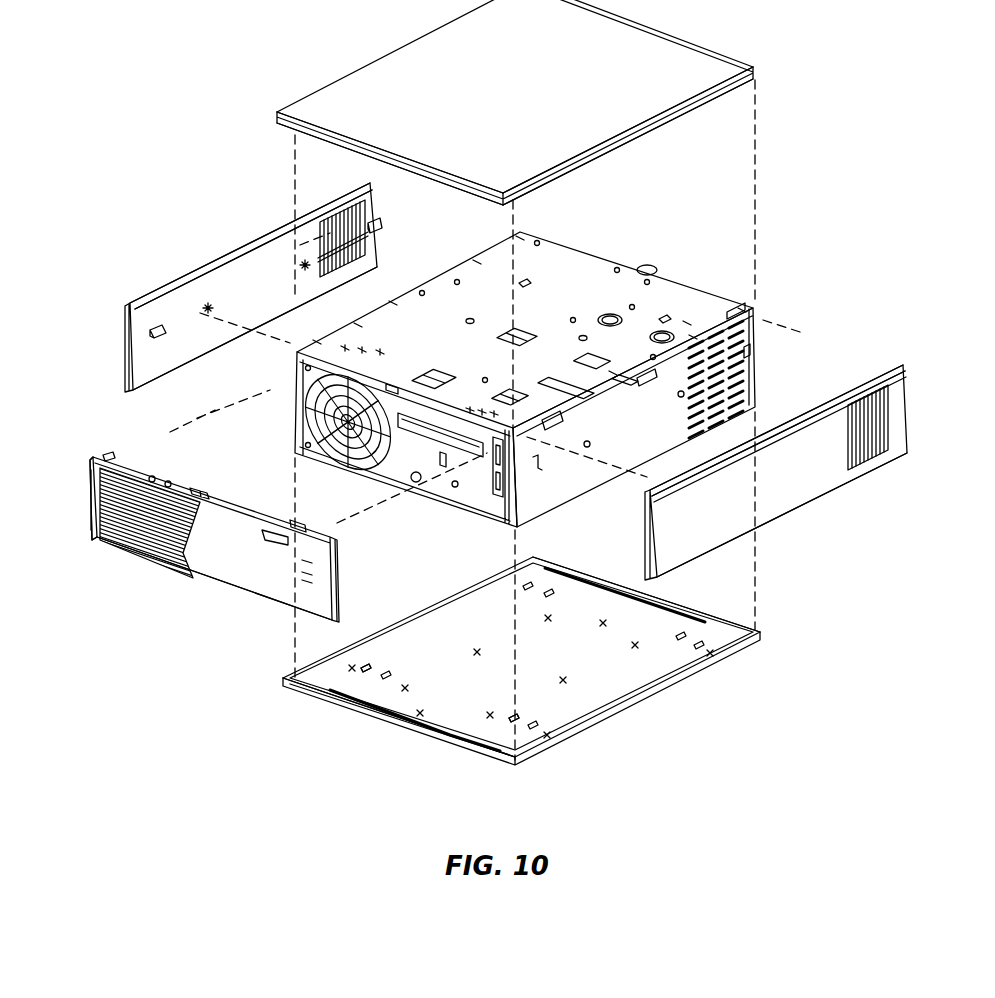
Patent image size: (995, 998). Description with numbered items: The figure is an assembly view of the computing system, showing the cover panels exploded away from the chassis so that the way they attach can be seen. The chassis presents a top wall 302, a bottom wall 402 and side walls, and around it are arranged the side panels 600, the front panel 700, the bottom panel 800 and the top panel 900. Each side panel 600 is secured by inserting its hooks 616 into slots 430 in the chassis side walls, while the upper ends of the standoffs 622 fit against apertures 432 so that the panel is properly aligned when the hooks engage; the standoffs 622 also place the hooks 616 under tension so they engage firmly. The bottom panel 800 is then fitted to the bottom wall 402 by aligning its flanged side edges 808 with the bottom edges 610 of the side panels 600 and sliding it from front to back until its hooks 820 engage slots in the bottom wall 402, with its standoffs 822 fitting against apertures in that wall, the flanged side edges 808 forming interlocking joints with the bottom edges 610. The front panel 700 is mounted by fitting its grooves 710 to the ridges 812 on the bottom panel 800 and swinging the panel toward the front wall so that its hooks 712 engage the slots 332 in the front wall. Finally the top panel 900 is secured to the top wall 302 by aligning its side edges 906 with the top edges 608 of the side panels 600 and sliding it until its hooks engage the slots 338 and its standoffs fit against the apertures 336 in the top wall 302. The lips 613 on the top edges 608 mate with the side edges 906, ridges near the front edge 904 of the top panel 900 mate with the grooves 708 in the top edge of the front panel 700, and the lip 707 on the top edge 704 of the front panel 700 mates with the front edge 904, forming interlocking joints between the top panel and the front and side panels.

The top wall 302 is at (580, 257).
The slots 332 is at (391, 384).
The apertures 336 is at (470, 319).
The slots 338 is at (525, 285).
The bottom wall 402 is at (431, 500).
The slots 430 is at (538, 462).
The apertures 432 is at (587, 441).
The side panels 600 is at (157, 288).
The top edges 608 is at (263, 232).
The bottom edges 610 is at (173, 375).
The lips 613 is at (202, 263).
The hooks 616 is at (147, 313).
The standoffs 622 is at (212, 303).
The front panel 700 is at (244, 565).
The top edge 704 is at (89, 472).
The lip 707 is at (109, 458).
The grooves 708 is at (156, 478).
The grooves 710 is at (230, 593).
The hooks 712 is at (206, 491).
The bottom panel 800 is at (598, 726).
The side edges 808 is at (643, 685).
The ridges 812 is at (332, 700).
The hooks 820 is at (367, 668).
The standoffs 822 is at (607, 603).
The top panel 900 is at (455, 27).
The front edge 904 is at (282, 120).
The side edges 906 is at (635, 135).